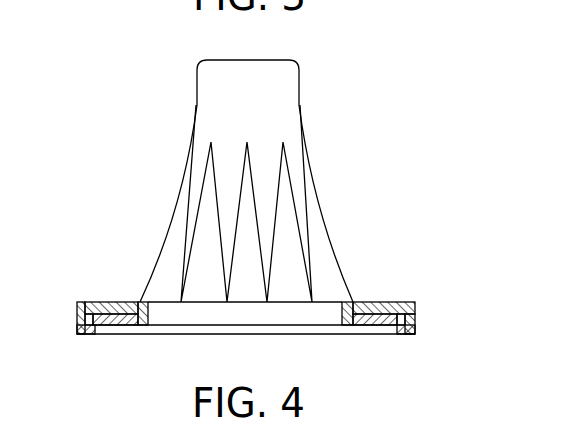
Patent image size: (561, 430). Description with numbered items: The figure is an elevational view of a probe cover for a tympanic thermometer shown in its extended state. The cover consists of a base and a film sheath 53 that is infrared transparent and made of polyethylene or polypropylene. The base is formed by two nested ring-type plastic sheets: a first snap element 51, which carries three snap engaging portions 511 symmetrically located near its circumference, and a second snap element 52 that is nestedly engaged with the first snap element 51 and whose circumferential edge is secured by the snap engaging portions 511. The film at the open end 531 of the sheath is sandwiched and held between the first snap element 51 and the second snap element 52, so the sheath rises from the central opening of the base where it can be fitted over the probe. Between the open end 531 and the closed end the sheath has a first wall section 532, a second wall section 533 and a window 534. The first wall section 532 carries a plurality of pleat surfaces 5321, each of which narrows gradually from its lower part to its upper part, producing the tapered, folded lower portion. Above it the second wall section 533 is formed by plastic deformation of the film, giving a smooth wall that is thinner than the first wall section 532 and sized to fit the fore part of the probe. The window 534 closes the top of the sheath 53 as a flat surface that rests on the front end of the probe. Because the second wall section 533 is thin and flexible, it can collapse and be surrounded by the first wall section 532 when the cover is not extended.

The first snap element 51 is at (393, 303).
The snap engaging portions 511 is at (415, 323).
The second snap element 52 is at (373, 325).
The film sheath 53 is at (237, 162).
The open end 531 is at (365, 305).
The first wall section 532 is at (157, 258).
The pleat surfaces 5321 is at (210, 218).
The second wall section 533 is at (203, 103).
The window 534 is at (260, 60).